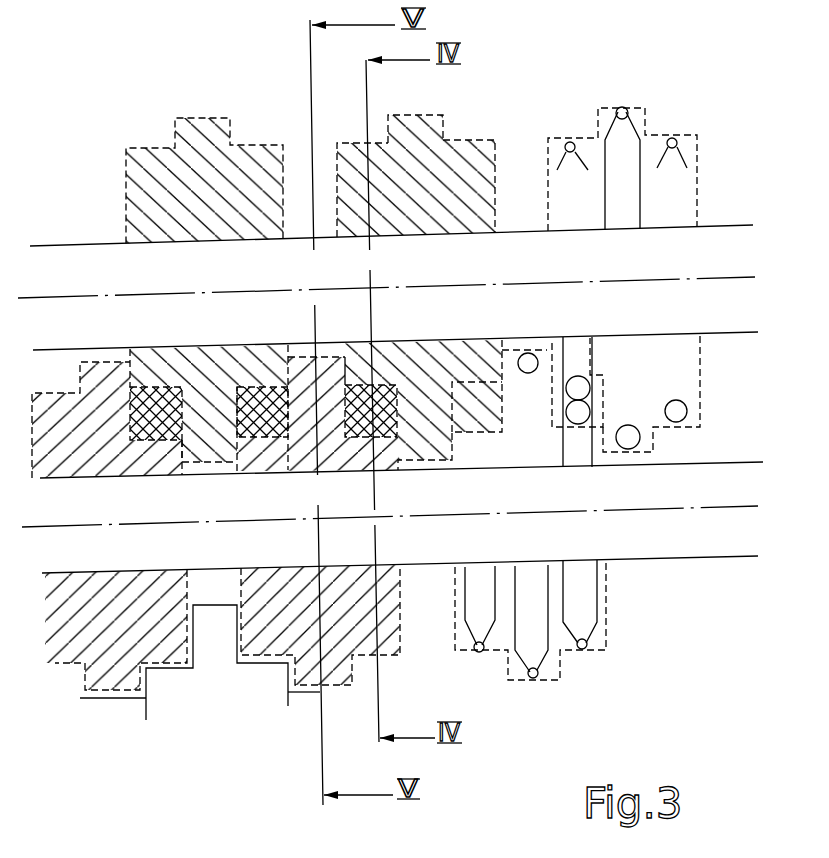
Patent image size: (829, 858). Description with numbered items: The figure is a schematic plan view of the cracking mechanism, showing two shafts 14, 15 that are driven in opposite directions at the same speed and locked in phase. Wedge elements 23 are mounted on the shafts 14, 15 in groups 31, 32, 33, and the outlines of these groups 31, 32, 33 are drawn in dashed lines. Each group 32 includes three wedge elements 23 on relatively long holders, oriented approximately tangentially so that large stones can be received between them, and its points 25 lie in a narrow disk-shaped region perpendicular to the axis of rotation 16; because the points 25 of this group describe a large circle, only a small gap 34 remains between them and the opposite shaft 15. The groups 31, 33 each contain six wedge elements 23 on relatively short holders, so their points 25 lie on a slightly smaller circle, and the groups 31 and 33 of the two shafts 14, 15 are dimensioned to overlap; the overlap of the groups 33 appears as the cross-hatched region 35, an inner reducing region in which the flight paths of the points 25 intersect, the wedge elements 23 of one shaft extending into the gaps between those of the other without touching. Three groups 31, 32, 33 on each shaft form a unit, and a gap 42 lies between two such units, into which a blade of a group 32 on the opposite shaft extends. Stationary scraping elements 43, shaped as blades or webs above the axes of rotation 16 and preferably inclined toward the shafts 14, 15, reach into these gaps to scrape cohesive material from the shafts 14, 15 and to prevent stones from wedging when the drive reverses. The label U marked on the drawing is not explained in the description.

The shaft 14 is at (716, 541).
The shaft 15 is at (720, 310).
The axis of rotation 16 is at (700, 503).
The wedge element 23 is at (530, 640).
The point 25 is at (478, 652).
The group 31 is at (476, 163).
The group 32 is at (428, 128).
The group 33 is at (377, 134).
The gap 34 is at (532, 336).
The cross-hatched region 35 is at (423, 380).
The gap 42 is at (290, 138).
The scraping element 43 is at (233, 700).
The U element U is at (662, 134).